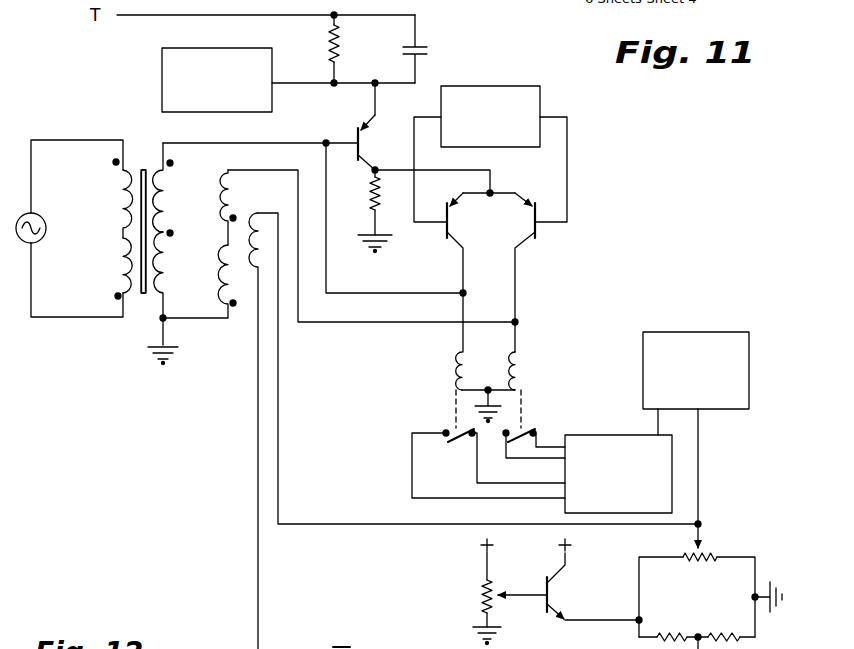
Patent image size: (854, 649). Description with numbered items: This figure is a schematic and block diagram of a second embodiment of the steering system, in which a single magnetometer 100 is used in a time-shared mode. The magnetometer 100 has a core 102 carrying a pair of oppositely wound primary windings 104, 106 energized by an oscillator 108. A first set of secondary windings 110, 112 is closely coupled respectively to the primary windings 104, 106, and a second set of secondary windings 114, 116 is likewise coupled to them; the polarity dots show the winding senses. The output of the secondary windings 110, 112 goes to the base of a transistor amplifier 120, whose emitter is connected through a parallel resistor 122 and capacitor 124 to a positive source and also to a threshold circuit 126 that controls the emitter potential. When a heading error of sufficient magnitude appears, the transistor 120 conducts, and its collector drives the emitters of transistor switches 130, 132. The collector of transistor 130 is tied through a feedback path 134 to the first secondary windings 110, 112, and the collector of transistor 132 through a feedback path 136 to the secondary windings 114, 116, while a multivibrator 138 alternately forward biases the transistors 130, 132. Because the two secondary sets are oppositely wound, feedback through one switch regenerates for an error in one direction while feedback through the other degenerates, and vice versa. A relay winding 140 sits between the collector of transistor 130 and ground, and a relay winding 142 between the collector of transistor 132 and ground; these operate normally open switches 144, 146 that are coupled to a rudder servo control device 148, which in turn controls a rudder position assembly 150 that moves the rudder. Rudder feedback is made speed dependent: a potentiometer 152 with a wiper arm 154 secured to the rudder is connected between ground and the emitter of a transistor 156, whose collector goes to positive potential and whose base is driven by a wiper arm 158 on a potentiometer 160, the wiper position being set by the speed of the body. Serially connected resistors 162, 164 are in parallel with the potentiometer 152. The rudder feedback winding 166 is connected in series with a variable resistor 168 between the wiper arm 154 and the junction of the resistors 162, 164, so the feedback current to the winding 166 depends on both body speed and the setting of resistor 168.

The magnetometer 100 is at (140, 331).
The core 102 is at (142, 167).
The primary winding 104 is at (121, 187).
The primary winding 106 is at (121, 286).
The oscillator 108 is at (46, 230).
The secondary winding 110 is at (166, 220).
The secondary winding 112 is at (167, 268).
The secondary winding 114 is at (217, 175).
The secondary winding 116 is at (218, 284).
The transistor amplifier 120 is at (352, 128).
The resistor 122 is at (341, 52).
The capacitor 124 is at (421, 49).
The threshold circuit 126 is at (237, 48).
The transistor switch 130 is at (458, 222).
The transistor switch 132 is at (532, 247).
The feedback path 134 is at (388, 293).
The feedback path 136 is at (342, 321).
The multivibrator 138 is at (508, 86).
The relay winding 140 is at (456, 358).
The relay winding 142 is at (522, 364).
The normally open switch 144 is at (469, 442).
The normally open switch 146 is at (524, 431).
The rudder servo control device 148 is at (637, 423).
The rudder position assembly 150 is at (705, 332).
The potentiometer 152 is at (722, 542).
The wiper arm 154 is at (703, 532).
The transistor 156 is at (561, 597).
The wiper arm 158 is at (531, 578).
The potentiometer 160 is at (478, 594).
The resistor 162 is at (659, 633).
The resistor 164 is at (746, 624).
The rudder feedback winding 166 is at (250, 212).
The variable resistor 168 is at (371, 635).